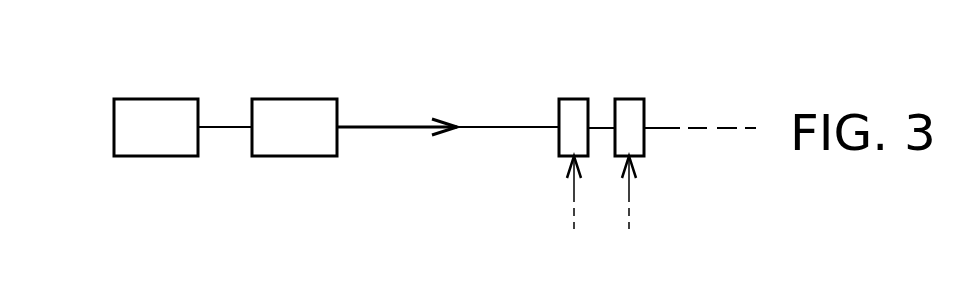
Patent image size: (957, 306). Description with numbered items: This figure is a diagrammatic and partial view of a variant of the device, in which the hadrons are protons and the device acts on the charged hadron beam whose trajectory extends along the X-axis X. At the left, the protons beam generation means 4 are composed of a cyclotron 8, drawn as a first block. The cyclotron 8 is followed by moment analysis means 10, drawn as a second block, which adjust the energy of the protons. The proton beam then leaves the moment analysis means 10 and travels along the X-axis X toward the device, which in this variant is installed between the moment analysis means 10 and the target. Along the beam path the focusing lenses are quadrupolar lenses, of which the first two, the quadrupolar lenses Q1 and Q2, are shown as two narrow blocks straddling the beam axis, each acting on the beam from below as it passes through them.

The cyclotron 8 is at (163, 102).
The moment analysis means 10 is at (299, 103).
The protons beam generation means 4 is at (405, 127).
The X-axis X is at (503, 127).
The quadrupolar lens Q1 is at (559, 103).
The quadrupolar lens Q2 is at (640, 135).